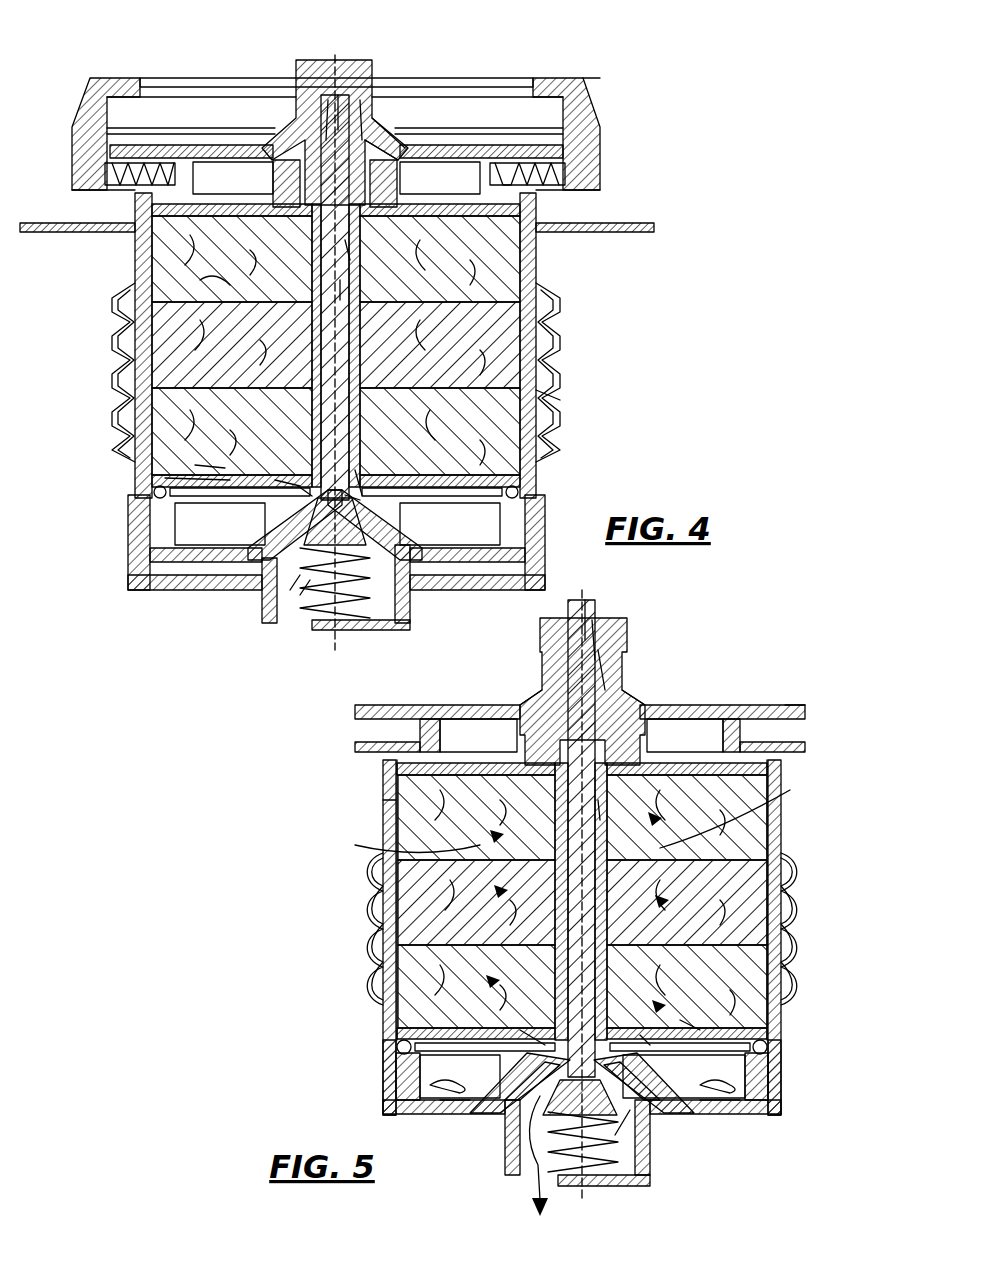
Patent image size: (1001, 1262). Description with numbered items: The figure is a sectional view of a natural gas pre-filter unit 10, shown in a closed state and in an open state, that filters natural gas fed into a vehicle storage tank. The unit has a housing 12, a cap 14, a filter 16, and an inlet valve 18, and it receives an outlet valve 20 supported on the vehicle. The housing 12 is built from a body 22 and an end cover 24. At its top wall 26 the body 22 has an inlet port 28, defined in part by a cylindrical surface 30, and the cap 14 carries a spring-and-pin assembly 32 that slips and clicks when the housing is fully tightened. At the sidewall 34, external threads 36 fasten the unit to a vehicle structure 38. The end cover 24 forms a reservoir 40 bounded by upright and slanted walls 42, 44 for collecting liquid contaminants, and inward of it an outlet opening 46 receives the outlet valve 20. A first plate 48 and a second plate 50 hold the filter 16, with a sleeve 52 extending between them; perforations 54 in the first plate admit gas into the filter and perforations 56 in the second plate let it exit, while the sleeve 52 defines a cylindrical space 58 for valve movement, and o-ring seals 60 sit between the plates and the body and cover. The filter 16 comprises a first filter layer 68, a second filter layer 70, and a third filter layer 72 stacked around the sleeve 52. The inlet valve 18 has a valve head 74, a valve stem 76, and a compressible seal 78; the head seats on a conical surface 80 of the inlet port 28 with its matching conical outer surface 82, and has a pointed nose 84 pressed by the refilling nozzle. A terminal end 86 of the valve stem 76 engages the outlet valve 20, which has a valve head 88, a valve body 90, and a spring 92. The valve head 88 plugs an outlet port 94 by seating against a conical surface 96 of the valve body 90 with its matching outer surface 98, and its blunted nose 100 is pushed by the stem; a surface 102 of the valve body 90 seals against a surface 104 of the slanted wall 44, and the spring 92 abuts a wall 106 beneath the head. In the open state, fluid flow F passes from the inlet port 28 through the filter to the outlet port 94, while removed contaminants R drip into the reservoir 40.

In FIG. 4, the natural gas pre-filter unit 10 is at (605, 70).
In FIG. 5, the natural gas pre-filter unit 10 is at (748, 680).
In FIG. 4, the housing 12 is at (468, 143).
In FIG. 5, the housing 12 is at (712, 705).
In FIG. 4, the cap 14 is at (105, 72).
In FIG. 4, the filter 16 is at (146, 345).
In FIG. 5, the filter 16 is at (394, 920).
In FIG. 4, the inlet valve 18 is at (395, 80).
In FIG. 5, the inlet valve 18 is at (610, 706).
In FIG. 4, the outlet valve 20 is at (262, 604).
In FIG. 5, the outlet valve 20 is at (652, 1150).
In FIG. 4, the body 22 is at (538, 252).
In FIG. 5, the body 22 is at (775, 830).
In FIG. 4, the end cover 24 is at (484, 578).
In FIG. 5, the end cover 24 is at (455, 1115).
In FIG. 4, the top wall 26 is at (205, 140).
In FIG. 5, the top wall 26 is at (672, 716).
In FIG. 4, the inlet port 28 is at (340, 85).
In FIG. 5, the inlet port 28 is at (588, 640).
In FIG. 4, the surface 30 is at (335, 78).
In FIG. 5, the surface 30 is at (578, 625).
In FIG. 4, the spring-and-pin assembly 32 is at (100, 173).
In FIG. 4, the sidewall 34 is at (552, 400).
In FIG. 5, the sidewall 34 is at (390, 812).
In FIG. 4, the external threads 36 is at (555, 332).
In FIG. 5, the external threads 36 is at (786, 864).
In FIG. 4, the vehicle structure 38 is at (86, 232).
In FIG. 4, the reservoir 40 is at (337, 524).
In FIG. 5, the reservoir 40 is at (582, 1076).
In FIG. 4, the upright wall 42 is at (136, 518).
In FIG. 5, the upright wall 42 is at (400, 1072).
In FIG. 4, the slanted wall 44 is at (240, 560).
In FIG. 4, the outlet opening 46 is at (358, 496).
In FIG. 5, the outlet opening 46 is at (530, 1050).
In FIG. 4, the first plate 48 is at (440, 178).
In FIG. 5, the first plate 48 is at (505, 762).
In FIG. 4, the second plate 50 is at (288, 484).
In FIG. 5, the second plate 50 is at (645, 1045).
In FIG. 4, the sleeve 52 is at (312, 268).
In FIG. 5, the sleeve 52 is at (598, 840).
In FIG. 4, the perforations 54 is at (233, 178).
In FIG. 5, the perforations 54 is at (690, 770).
In FIG. 4, the perforations 56 is at (225, 478).
In FIG. 5, the perforations 56 is at (700, 1032).
In FIG. 4, the cylindrical space 58 is at (346, 252).
In FIG. 5, the cylindrical space 58 is at (598, 820).
In FIG. 4, the seals 60 is at (530, 207).
In FIG. 5, the seals 60 is at (398, 770).
In FIG. 4, the first filter layer 68 is at (336, 253).
In FIG. 5, the first filter layer 68 is at (582, 811).
In FIG. 4, the second filter layer 70 is at (336, 345).
In FIG. 5, the second filter layer 70 is at (582, 902).
In FIG. 4, the third filter layer 72 is at (336, 437).
In FIG. 5, the third filter layer 72 is at (582, 992).
In FIG. 4, the valve head 74 is at (388, 122).
In FIG. 5, the valve head 74 is at (598, 690).
In FIG. 4, the valve stem 76 is at (346, 290).
In FIG. 4, the compressible seal 78 is at (398, 145).
In FIG. 5, the compressible seal 78 is at (626, 720).
In FIG. 4, the surface 80 is at (323, 110).
In FIG. 5, the outer surface 82 is at (560, 705).
In FIG. 4, the nose 84 is at (362, 110).
In FIG. 5, the nose 84 is at (598, 660).
In FIG. 4, the terminal end 86 is at (360, 500).
In FIG. 4, the valve head 88 is at (342, 583).
In FIG. 5, the valve head 88 is at (630, 1130).
In FIG. 4, the valve body 90 is at (398, 560).
In FIG. 5, the valve body 90 is at (640, 1108).
In FIG. 4, the spring 92 is at (306, 596).
In FIG. 5, the spring 92 is at (625, 1140).
In FIG. 4, the outlet port 94 is at (302, 490).
In FIG. 4, the surface 96 is at (296, 592).
In FIG. 5, the outer surface 98 is at (545, 1110).
In FIG. 5, the nose 100 is at (655, 1103).
In FIG. 4, the surface 102 is at (215, 468).
In FIG. 4, the surface 104 is at (388, 534).
In FIG. 4, the wall 106 is at (360, 630).
In FIG. 5, the wall 106 is at (566, 1187).
In FIG. 5, the fluid flow F is at (575, 817).
In FIG. 5, the removed contaminants R is at (452, 1105).